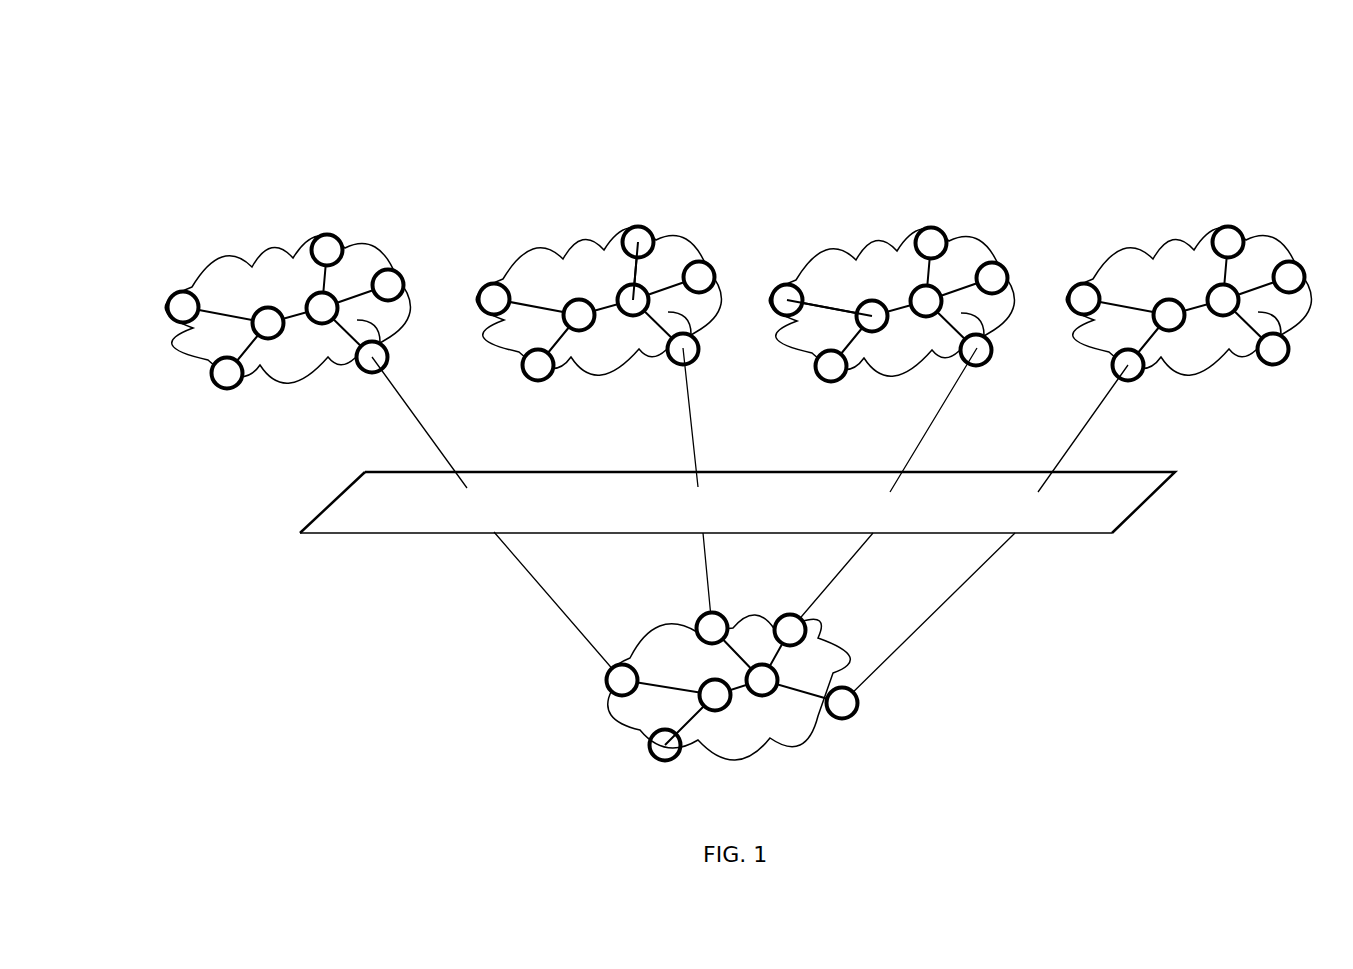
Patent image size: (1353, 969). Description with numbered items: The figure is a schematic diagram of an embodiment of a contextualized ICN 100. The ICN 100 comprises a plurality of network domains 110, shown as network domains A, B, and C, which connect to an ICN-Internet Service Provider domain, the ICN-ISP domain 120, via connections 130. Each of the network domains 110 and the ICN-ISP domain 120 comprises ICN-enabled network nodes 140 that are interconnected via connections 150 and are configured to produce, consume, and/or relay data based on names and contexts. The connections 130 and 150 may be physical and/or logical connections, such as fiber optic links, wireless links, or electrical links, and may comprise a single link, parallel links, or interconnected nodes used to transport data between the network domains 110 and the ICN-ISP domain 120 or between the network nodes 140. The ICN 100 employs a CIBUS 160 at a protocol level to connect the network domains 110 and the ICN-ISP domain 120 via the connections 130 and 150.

The contextualized ICN 100 is at (310, 58).
The network domains 110 is at (200, 268).
The ICN-ISP domain 120 is at (613, 712).
The connections 130 is at (935, 620).
The ICN-enabled network nodes 140 is at (168, 320).
The connections 150 is at (825, 302).
The CIBUS 160 is at (1147, 500).